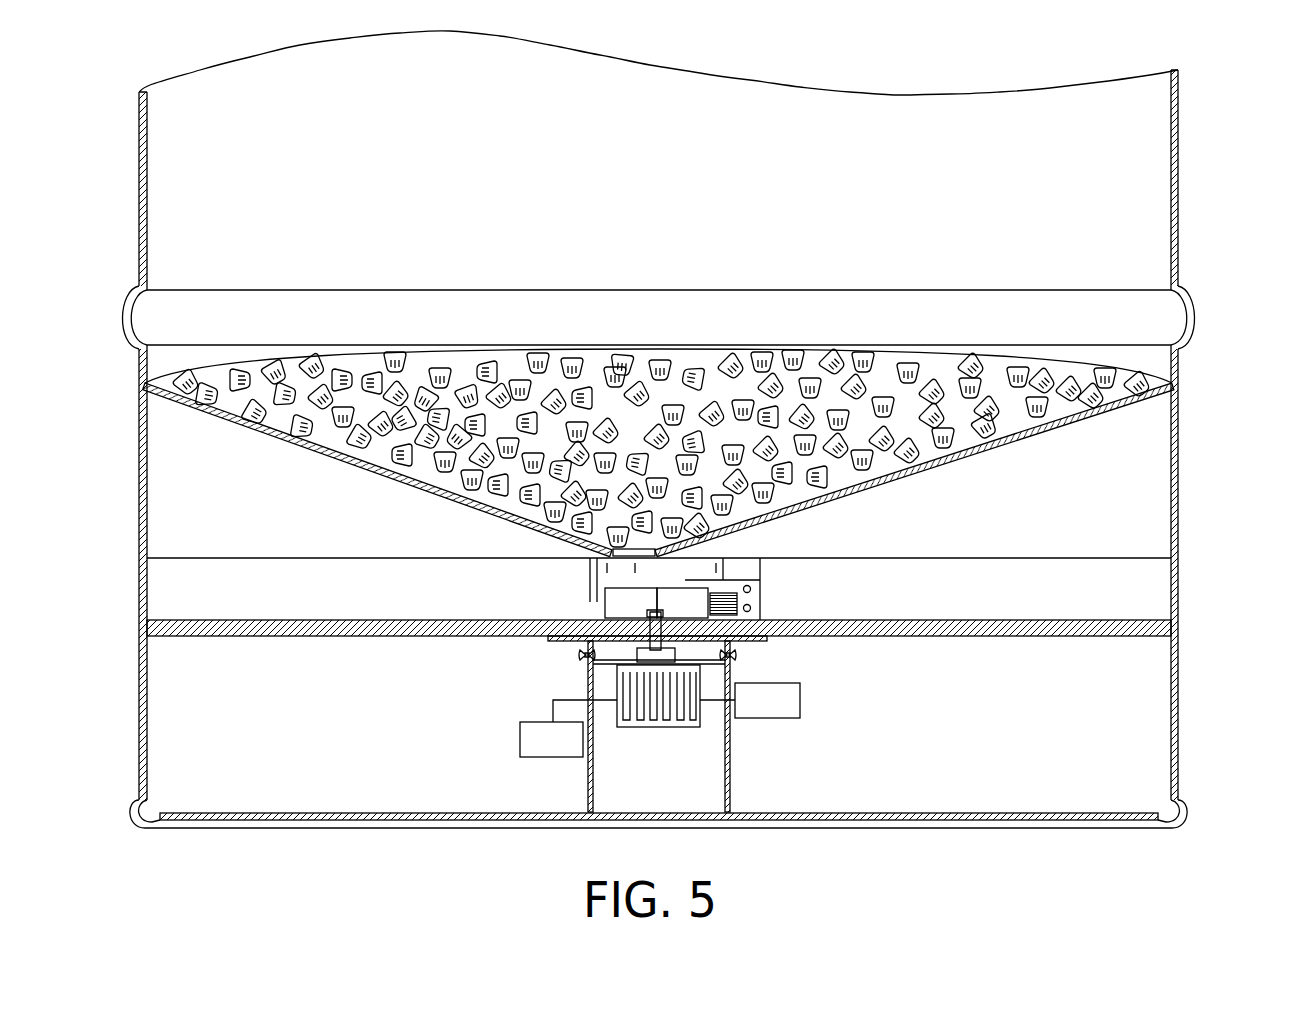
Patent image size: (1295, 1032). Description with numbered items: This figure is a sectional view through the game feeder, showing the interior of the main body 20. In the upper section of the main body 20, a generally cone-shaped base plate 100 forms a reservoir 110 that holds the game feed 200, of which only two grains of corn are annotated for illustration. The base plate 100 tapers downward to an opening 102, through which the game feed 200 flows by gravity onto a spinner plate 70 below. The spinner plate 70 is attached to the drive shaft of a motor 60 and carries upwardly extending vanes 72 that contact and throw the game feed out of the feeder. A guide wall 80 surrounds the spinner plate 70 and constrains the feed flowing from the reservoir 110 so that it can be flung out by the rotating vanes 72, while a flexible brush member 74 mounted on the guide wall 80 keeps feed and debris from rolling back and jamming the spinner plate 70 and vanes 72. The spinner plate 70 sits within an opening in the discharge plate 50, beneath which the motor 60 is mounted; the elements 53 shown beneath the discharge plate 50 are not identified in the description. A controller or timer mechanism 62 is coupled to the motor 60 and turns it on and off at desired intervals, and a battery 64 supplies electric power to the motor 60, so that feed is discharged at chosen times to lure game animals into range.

The main body 20 is at (1178, 183).
The discharge plate 50 is at (952, 636).
The support legs 53 is at (590, 784).
The motor 60 is at (658, 705).
The controller or timer mechanism 62 is at (568, 728).
The battery 64 is at (750, 700).
The spinner plate 70 is at (597, 615).
The vanes 72 is at (682, 603).
The brush member 74 is at (723, 597).
The guide wall 80 is at (659, 577).
The base plate 100 is at (927, 470).
The opening 102 is at (630, 552).
The reservoir 110 is at (622, 357).
The game feed 200 is at (440, 370).